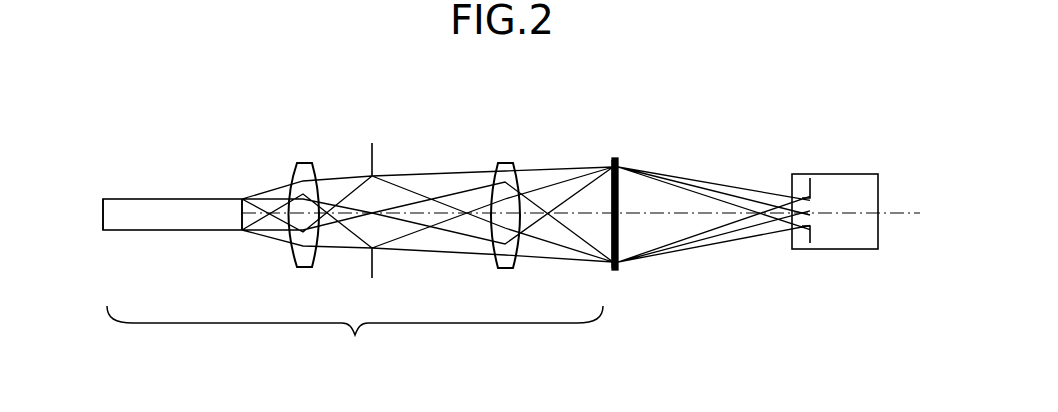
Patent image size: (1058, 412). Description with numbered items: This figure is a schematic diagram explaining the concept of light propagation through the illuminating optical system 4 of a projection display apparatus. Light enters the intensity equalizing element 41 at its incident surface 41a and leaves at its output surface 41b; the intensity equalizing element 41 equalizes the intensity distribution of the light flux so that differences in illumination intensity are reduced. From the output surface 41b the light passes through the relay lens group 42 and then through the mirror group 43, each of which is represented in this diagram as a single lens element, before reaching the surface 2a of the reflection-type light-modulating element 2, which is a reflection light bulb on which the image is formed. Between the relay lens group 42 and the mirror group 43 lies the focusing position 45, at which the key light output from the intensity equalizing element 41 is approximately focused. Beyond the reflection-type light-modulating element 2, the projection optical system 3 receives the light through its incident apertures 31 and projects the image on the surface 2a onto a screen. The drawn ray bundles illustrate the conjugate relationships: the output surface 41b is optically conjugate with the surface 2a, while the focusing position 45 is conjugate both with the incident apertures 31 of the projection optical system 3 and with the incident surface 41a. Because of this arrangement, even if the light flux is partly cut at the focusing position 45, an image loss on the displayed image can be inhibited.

The reflection-type light-modulating element 2 is at (615, 158).
The surface of reflection-type light-modulating element 2a is at (610, 181).
The projection optical system 3 is at (843, 174).
The incident apertures 31 is at (808, 243).
The illuminating optical system 4 is at (348, 239).
The intensity equalizing element 41 is at (175, 199).
The incident surface of intensity equalizing element 41a is at (104, 204).
The output surface of intensity equalizing element 41b is at (250, 203).
The relay lens group 42 is at (304, 163).
The mirror group 43 is at (504, 163).
The focusing position 45 is at (372, 143).